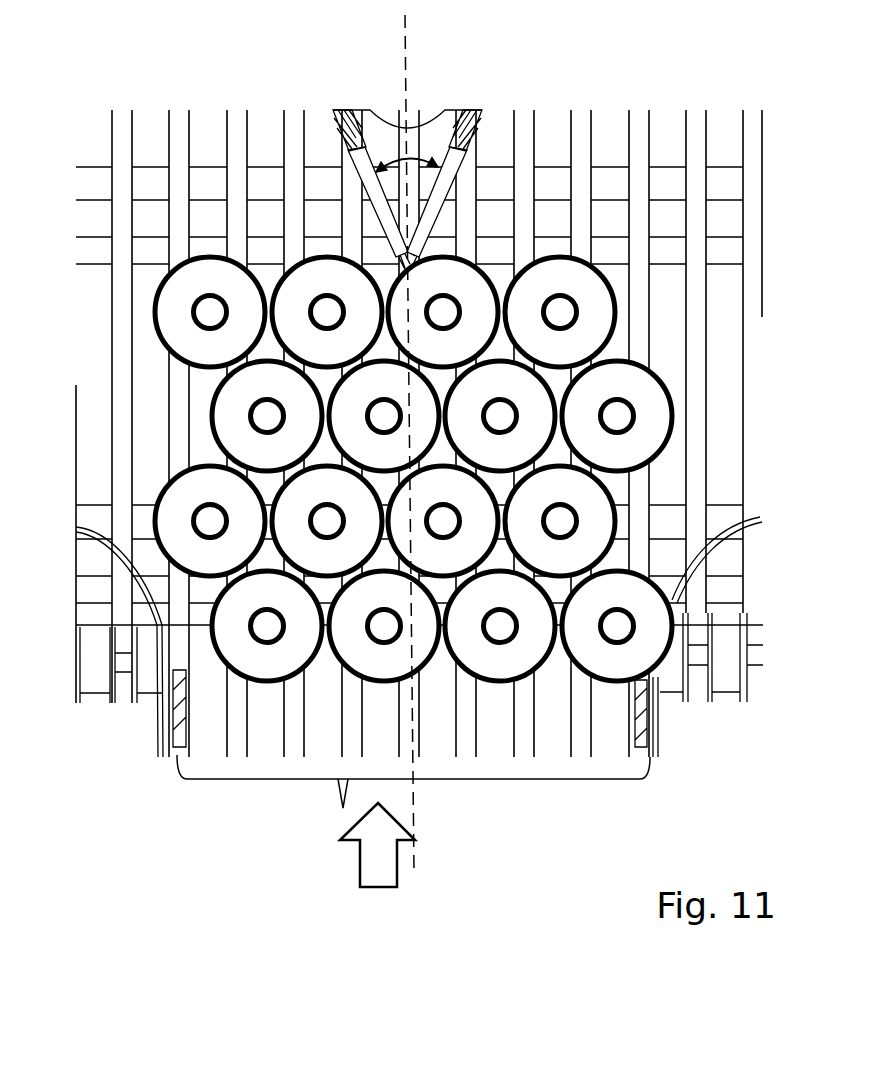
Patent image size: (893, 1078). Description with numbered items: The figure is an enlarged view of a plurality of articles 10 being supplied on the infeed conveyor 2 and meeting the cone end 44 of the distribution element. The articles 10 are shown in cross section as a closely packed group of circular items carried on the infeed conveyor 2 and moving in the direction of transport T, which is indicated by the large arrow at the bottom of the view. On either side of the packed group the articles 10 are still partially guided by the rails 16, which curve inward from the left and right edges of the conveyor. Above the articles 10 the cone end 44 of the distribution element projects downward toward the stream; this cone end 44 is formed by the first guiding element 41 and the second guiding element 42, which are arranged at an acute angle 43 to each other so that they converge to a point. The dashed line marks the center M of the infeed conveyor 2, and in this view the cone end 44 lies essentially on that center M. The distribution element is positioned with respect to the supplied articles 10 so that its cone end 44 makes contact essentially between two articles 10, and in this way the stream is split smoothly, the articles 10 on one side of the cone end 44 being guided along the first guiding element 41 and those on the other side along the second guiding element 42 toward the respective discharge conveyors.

The infeed conveyor 2 is at (290, 779).
The articles 10 is at (193, 335).
The rails 16 is at (112, 547).
The first guiding element 41 is at (345, 130).
The second guiding element 42 is at (470, 145).
The acute angle 43 is at (378, 170).
The cone end 44 is at (440, 255).
The center of the infeed conveyor M is at (407, 60).
The direction of transport T is at (370, 858).